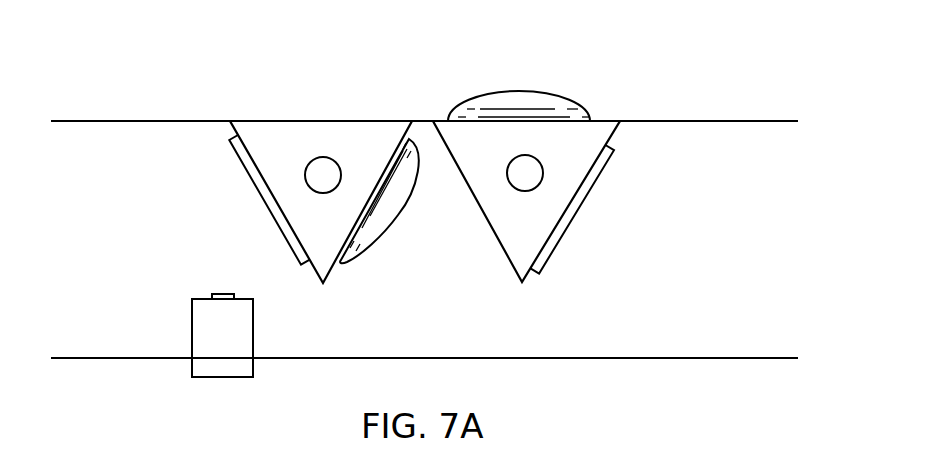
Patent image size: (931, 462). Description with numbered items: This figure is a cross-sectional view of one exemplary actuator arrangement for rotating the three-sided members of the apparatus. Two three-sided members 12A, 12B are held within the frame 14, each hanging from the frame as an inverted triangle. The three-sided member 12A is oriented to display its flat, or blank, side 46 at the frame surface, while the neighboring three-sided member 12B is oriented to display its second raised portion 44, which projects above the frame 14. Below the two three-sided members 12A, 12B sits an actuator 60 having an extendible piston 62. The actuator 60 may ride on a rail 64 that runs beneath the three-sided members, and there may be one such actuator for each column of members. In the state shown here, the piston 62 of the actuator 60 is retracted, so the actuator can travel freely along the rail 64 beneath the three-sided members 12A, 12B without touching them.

The 3-sided member 12A is at (260, 143).
The 3-sided member 12B is at (513, 233).
The frame 14 is at (713, 121).
The second raised portion 44 is at (521, 83).
The flat side 46 is at (315, 120).
The actuator 60 is at (192, 322).
The extendible piston 62 is at (223, 294).
The rail 64 is at (661, 358).